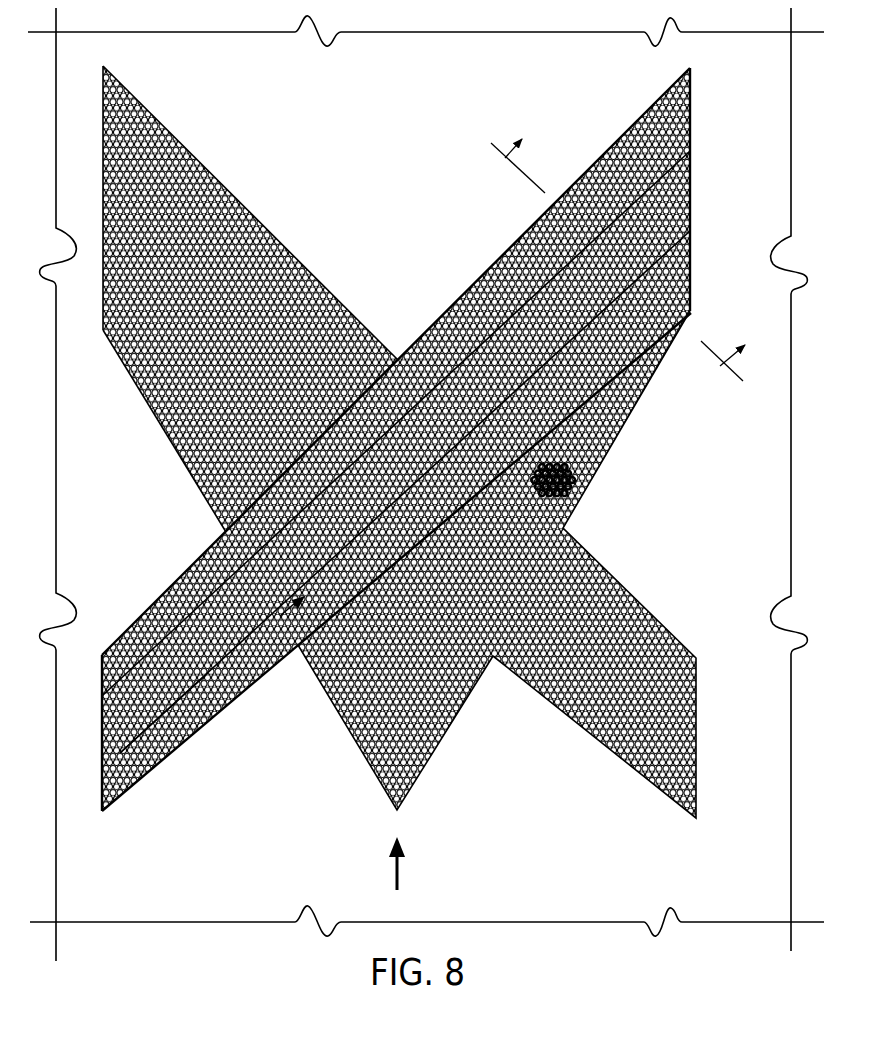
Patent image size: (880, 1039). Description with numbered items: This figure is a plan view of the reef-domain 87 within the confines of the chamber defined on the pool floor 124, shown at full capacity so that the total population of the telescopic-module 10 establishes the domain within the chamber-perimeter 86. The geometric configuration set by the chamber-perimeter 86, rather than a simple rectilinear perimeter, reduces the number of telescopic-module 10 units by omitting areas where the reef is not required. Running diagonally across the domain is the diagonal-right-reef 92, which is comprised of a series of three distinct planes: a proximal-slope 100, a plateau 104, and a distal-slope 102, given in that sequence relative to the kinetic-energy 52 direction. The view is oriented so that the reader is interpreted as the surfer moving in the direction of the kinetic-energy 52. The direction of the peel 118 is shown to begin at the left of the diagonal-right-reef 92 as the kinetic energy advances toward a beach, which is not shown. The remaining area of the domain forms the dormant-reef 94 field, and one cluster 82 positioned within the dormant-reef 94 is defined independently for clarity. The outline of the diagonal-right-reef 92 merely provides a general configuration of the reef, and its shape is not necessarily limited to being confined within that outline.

The telescopic-module 10 is at (631, 249).
The kinetic-energy 52 is at (385, 862).
The cluster 82 is at (573, 485).
The chamber-perimeter 86 is at (340, 290).
The reef-domain 87 is at (268, 206).
The diagonal-right-reef 92 is at (222, 700).
The dormant-reef 94 is at (197, 258).
The proximal-slope 100 is at (623, 338).
The distal-slope 102 is at (551, 251).
The plateau 104 is at (496, 379).
The peel 118 is at (175, 694).
The pool floor 124 is at (436, 201).